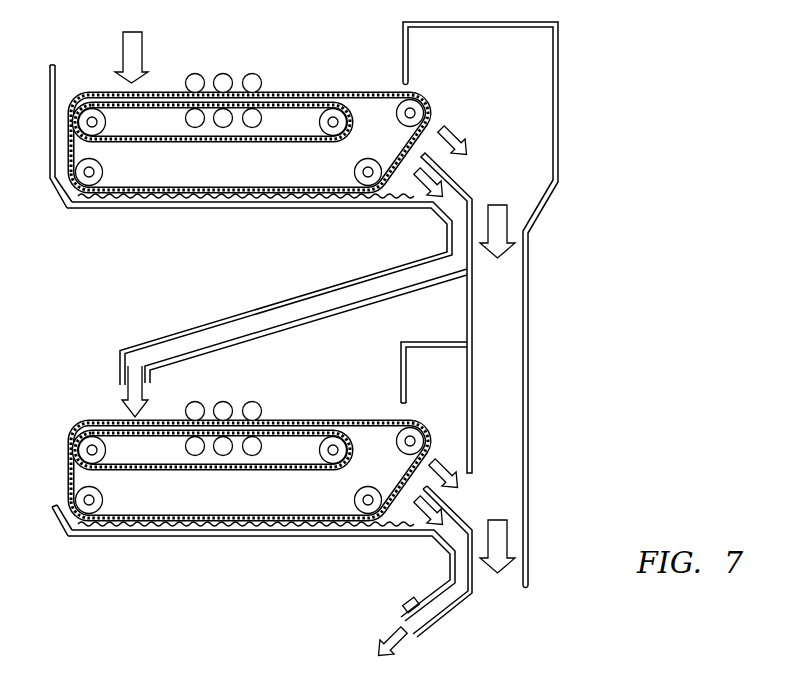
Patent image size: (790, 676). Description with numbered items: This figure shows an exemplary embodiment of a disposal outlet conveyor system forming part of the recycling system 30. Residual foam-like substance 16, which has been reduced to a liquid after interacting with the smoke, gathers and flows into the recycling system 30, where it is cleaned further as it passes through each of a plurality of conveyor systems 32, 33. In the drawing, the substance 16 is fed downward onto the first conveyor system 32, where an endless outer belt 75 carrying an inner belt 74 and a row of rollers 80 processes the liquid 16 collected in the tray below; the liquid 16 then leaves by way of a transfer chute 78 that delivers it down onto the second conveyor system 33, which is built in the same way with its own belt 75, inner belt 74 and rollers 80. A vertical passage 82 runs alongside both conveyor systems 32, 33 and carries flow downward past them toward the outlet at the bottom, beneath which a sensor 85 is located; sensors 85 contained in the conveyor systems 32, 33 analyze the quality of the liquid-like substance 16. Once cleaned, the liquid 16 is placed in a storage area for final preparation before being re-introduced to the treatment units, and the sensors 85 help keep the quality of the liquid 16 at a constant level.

The foam-like substance 16 is at (128, 55).
The recycling system 30 is at (592, 84).
The conveyor system 32 is at (298, 49).
The conveyor system 33 is at (97, 398).
The inner belt 74 is at (290, 109).
The conveyor belt 75 is at (293, 92).
The transfer chute 78 is at (452, 206).
The rollers 80 is at (188, 76).
The vertical passage 82 is at (515, 316).
The sensors 85 is at (402, 600).